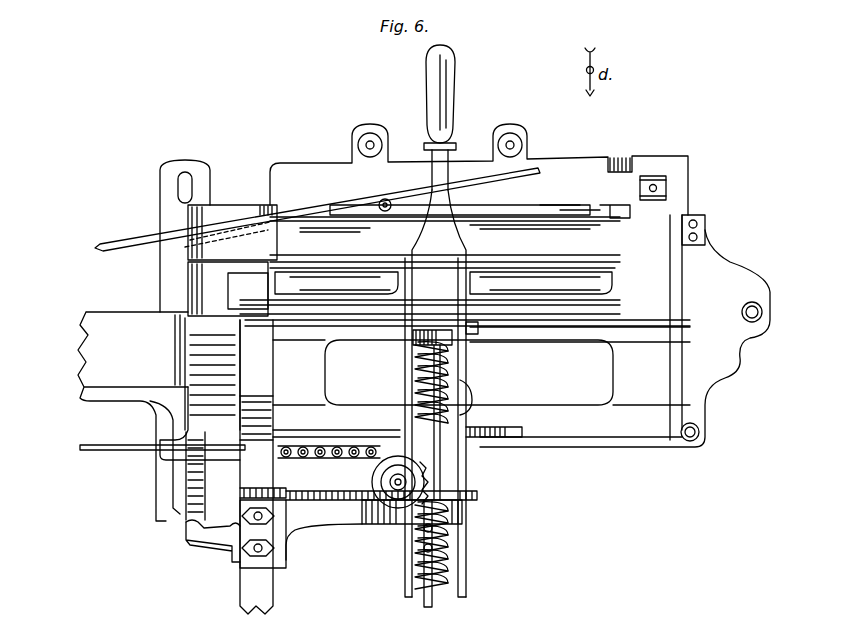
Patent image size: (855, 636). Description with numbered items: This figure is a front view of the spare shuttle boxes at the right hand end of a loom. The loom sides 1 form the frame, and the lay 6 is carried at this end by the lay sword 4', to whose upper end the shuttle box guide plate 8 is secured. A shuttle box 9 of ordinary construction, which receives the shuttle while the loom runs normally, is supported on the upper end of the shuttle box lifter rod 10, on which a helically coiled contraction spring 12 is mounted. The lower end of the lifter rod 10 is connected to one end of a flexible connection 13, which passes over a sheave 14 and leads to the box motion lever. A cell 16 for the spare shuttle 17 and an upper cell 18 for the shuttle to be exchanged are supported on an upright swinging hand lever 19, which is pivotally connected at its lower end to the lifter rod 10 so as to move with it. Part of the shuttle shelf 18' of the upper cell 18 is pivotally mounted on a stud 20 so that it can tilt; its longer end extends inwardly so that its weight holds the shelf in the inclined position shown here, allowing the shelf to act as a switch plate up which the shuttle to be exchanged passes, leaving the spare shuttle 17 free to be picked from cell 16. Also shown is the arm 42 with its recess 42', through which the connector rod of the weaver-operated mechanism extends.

The loom sides 1 is at (270, 356).
The lay sword 4' is at (162, 476).
The lay 6 is at (92, 360).
The shuttle box guide plate 8 is at (680, 288).
The shuttle box 9 is at (465, 298).
The shuttle box lifter rod 10 is at (424, 598).
The helically coiled contraction spring 12 is at (440, 566).
The flexible connection 13 is at (322, 458).
The sheave 14 is at (378, 462).
The cell for the spare shuttle 16 is at (622, 214).
The spare shuttle 17 is at (476, 224).
The cell for the shuttle to be exchanged 18 is at (479, 194).
The shuttle shelf 18' is at (315, 192).
The upright swinging hand lever 19 is at (452, 112).
The stud 20 is at (378, 203).
The arm 42 is at (193, 548).
The recess 42' is at (213, 502).